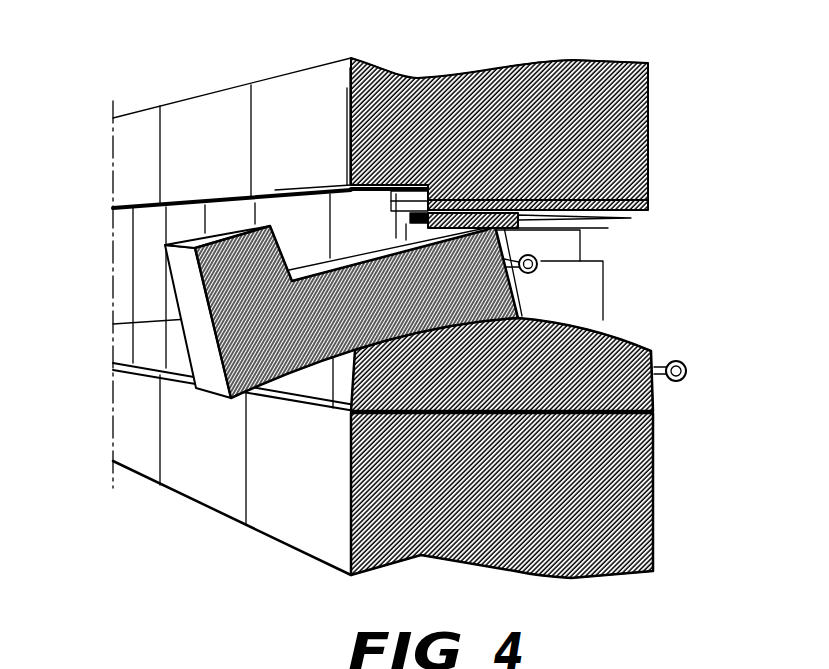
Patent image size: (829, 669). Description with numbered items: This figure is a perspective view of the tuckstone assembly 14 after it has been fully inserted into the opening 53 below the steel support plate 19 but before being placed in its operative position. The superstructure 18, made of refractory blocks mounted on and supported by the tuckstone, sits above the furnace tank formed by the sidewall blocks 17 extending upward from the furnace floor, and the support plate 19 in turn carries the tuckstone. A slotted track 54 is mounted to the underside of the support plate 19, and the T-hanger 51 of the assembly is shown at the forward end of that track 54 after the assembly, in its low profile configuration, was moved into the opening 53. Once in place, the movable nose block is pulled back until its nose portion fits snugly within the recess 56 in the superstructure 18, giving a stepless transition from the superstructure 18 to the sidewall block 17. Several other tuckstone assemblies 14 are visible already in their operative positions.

The tuckstone assembly 14 is at (226, 201).
The sidewall block 17 is at (292, 526).
The superstructure 18 is at (276, 100).
The support plate 19 is at (641, 199).
The T-hanger 51 is at (400, 216).
The opening 53 is at (625, 294).
The slotted track 54 is at (624, 210).
The recess 56 is at (348, 187).